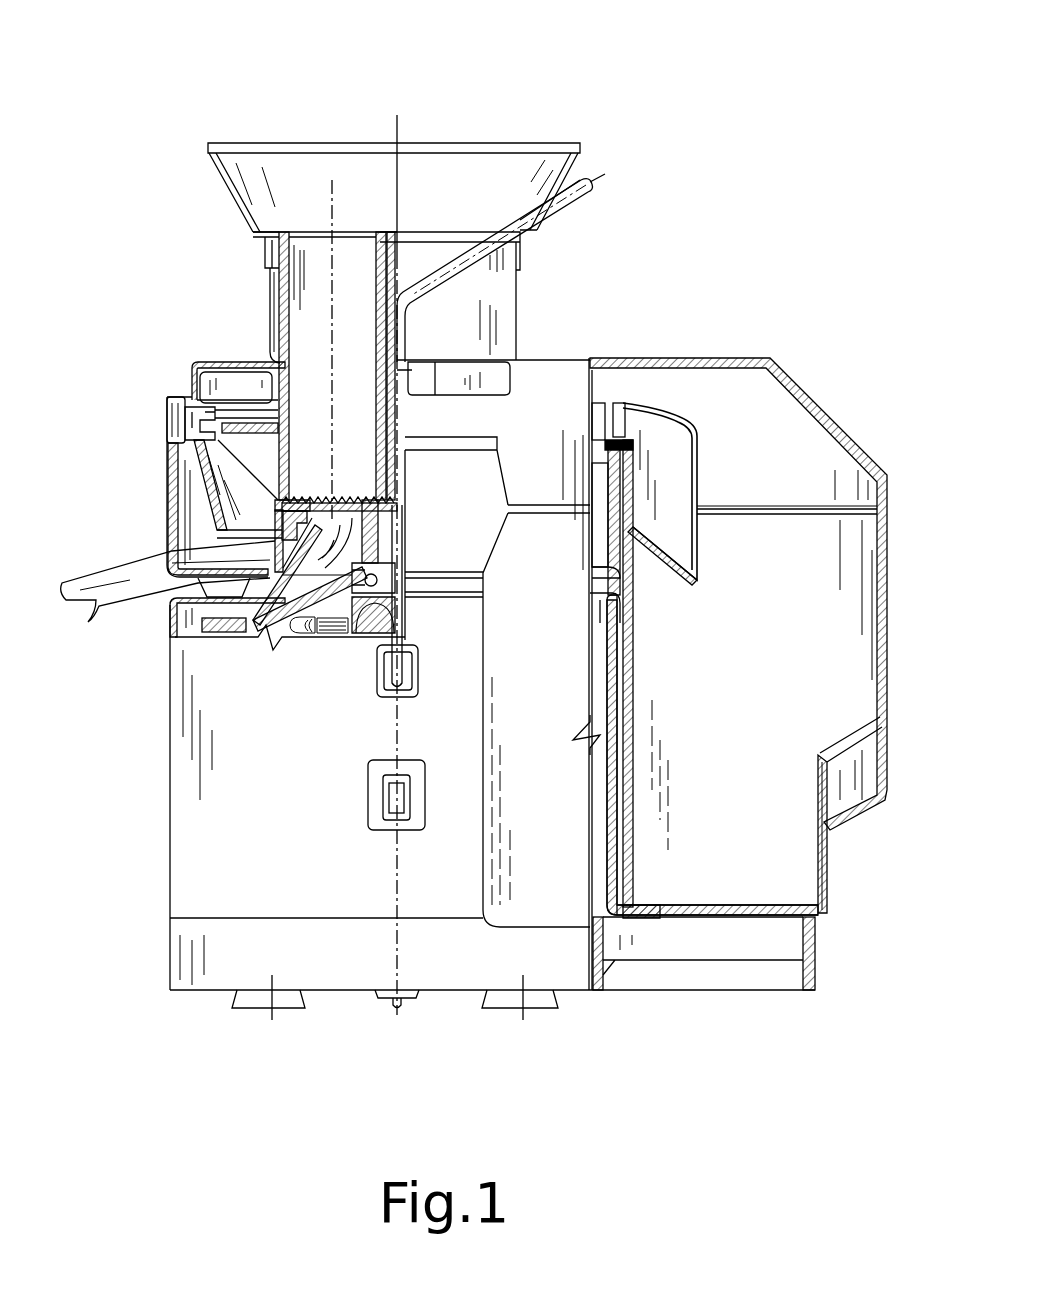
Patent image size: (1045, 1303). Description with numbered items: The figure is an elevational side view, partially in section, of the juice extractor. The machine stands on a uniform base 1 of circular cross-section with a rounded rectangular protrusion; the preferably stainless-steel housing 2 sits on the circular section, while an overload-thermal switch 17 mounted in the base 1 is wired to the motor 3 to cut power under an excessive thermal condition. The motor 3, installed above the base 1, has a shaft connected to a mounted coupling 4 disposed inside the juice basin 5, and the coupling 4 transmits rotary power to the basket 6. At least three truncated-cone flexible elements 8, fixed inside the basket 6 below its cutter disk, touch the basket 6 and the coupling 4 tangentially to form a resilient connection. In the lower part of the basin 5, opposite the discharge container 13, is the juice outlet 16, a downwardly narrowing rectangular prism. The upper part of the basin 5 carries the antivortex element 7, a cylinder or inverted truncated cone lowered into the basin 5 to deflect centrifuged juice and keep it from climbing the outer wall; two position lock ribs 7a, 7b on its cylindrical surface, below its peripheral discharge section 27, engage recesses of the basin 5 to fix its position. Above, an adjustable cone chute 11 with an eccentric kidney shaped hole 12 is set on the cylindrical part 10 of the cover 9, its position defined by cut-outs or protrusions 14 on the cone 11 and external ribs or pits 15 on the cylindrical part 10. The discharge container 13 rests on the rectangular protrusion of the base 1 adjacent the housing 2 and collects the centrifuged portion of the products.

The uniform base 1 is at (233, 950).
The housing 2 is at (260, 792).
The motor 3 is at (245, 635).
The mounted coupling 4 is at (275, 541).
The juice basin 5 is at (168, 490).
The basket 6 is at (196, 412).
The antivortex element 7 is at (168, 417).
The position lock rib 7a is at (640, 437).
The position lock rib 7b is at (759, 612).
The flexible elements 8 is at (323, 493).
The cover 9 is at (823, 405).
The cylindrical part of the cover 10 is at (457, 313).
The adjustable cone chute 11 is at (210, 143).
The kidney shaped hole 12 is at (313, 150).
The discharge container 13 is at (827, 855).
The cut-outs or protrusions 14 is at (267, 257).
The external ribs or pits 15 is at (272, 312).
The outlet 16 is at (144, 575).
The overload-thermal switch 17 is at (408, 1000).
The discharge section 27 is at (700, 497).